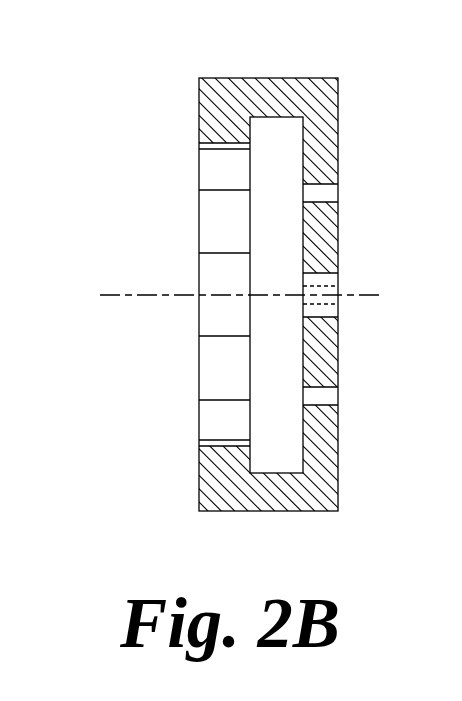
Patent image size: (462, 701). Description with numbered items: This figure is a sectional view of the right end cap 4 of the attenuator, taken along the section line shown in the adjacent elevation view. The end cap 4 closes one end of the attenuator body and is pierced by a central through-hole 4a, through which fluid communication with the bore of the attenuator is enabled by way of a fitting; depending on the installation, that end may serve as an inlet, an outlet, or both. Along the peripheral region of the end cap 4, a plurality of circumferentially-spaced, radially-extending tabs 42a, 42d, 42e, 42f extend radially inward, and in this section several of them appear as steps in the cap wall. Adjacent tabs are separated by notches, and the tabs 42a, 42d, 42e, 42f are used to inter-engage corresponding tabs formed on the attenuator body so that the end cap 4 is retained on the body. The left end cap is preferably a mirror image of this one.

The end cap 4 is at (190, 107).
The through-hole 4a is at (338, 288).
The tab 42a is at (216, 135).
The tab 42d is at (224, 447).
The tab 42e is at (228, 368).
The tab 42f is at (220, 222).